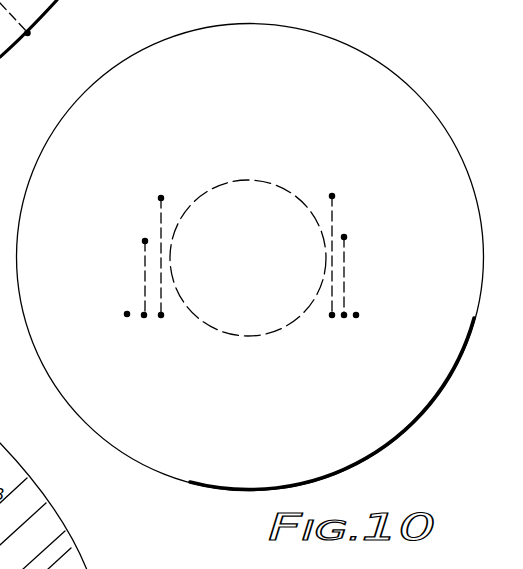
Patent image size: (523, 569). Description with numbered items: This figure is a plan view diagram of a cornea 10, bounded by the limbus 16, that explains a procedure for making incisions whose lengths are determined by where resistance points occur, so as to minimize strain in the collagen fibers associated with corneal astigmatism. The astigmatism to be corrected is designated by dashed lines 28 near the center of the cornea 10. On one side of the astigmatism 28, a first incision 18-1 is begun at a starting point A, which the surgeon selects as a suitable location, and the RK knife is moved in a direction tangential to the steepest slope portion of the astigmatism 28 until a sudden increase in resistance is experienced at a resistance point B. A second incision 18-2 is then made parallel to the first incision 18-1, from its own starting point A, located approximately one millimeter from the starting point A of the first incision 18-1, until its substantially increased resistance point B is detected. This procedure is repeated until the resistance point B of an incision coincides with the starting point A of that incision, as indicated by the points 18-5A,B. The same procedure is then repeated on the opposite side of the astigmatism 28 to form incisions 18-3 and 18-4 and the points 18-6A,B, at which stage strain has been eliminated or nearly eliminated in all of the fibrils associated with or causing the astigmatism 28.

The cornea 10 is at (250, 257).
The limbus 16 is at (437, 118).
The astigmatism 28 is at (266, 183).
The first incision 18-1 is at (161, 222).
The second incision 18-2 is at (145, 266).
The incision 18-3 is at (332, 228).
The incision 18-4 is at (344, 272).
The incision points 18-5A,B is at (127, 314).
The incision points 18-6A,B is at (356, 316).
The starting point A is at (144, 316).
The resistance point B is at (161, 198).